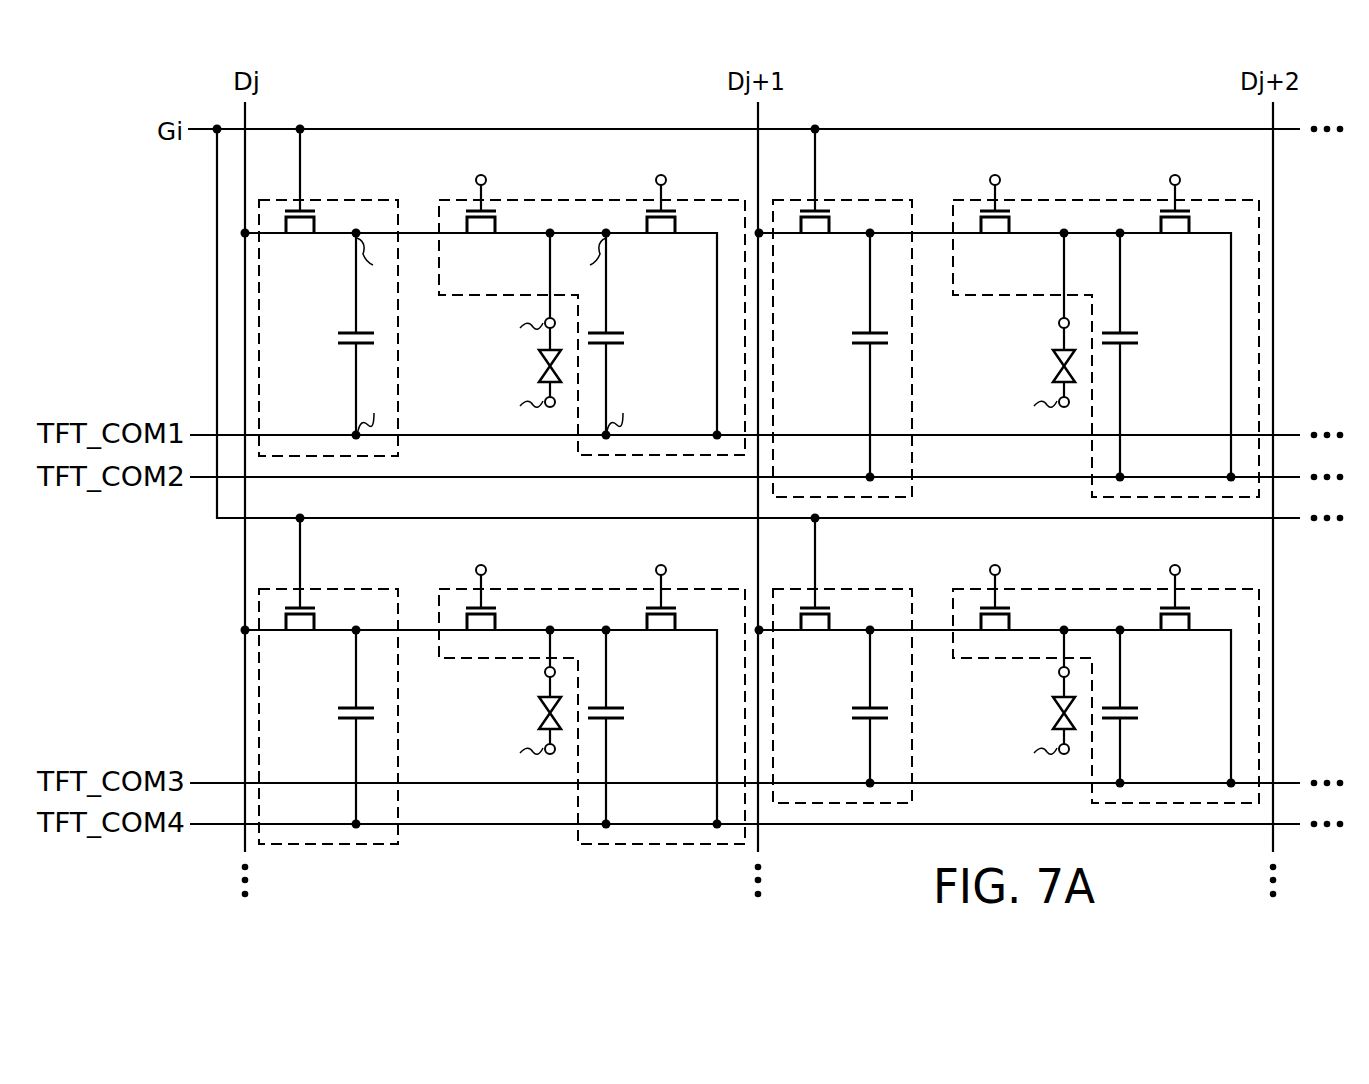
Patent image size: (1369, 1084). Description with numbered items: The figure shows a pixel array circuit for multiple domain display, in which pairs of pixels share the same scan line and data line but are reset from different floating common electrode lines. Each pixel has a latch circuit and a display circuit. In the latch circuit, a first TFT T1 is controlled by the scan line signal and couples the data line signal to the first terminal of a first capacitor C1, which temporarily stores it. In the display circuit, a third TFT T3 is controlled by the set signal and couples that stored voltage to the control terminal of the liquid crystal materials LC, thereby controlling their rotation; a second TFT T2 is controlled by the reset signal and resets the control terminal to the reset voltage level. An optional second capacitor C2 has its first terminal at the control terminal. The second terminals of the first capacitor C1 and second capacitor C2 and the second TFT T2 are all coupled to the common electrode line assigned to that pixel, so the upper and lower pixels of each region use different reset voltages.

The first TFT T1 is at (300, 240).
The second TFT T2 is at (661, 240).
The third TFT T3 is at (481, 240).
The first capacitor C1 is at (339, 339).
The second capacitor C2 is at (626, 339).
The liquid crystal materials LC is at (539, 366).